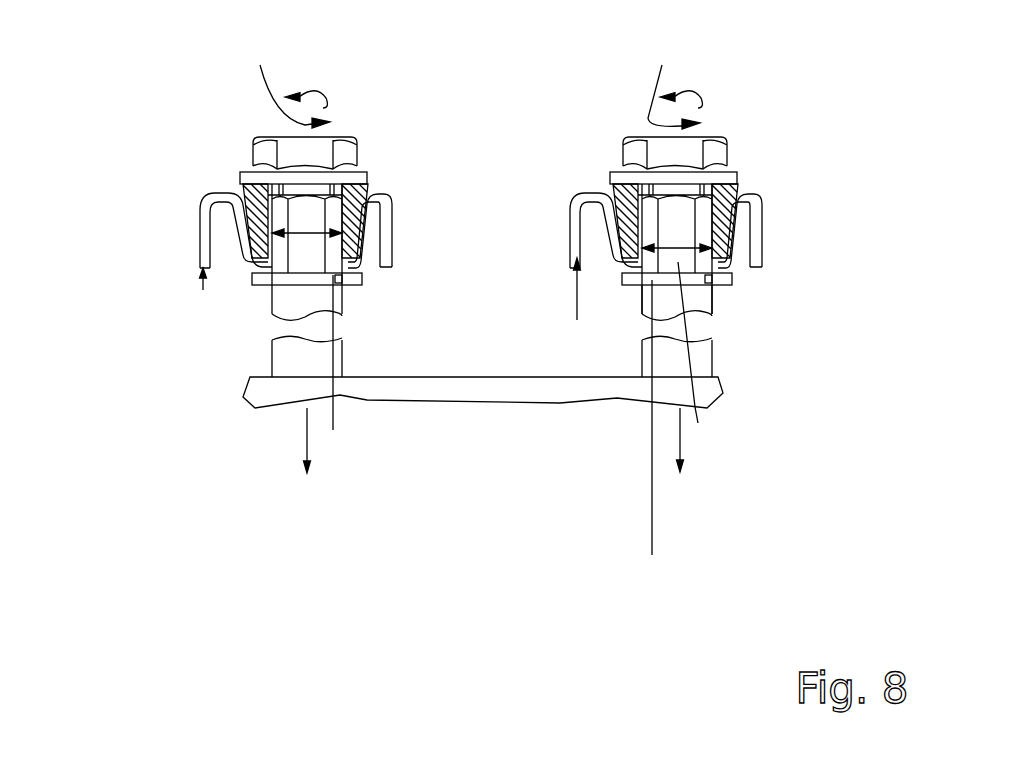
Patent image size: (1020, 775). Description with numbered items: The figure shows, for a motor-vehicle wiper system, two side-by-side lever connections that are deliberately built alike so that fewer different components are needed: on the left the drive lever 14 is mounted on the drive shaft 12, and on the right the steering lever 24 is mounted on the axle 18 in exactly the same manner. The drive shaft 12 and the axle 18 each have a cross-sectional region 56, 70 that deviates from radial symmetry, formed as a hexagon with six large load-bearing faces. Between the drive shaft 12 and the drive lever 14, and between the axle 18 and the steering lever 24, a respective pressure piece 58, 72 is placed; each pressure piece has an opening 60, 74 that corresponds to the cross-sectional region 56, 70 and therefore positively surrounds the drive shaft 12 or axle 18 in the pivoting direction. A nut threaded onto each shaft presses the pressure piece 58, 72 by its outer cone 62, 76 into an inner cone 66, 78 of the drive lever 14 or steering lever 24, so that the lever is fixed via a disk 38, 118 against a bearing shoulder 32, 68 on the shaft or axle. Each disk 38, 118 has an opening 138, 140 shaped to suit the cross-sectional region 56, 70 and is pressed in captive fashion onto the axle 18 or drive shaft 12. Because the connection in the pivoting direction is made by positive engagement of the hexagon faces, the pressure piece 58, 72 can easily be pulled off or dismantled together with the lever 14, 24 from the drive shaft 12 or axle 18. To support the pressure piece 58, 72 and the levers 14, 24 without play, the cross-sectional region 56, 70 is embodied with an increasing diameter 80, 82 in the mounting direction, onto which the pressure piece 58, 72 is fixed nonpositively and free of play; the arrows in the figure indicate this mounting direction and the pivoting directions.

The drive shaft 12 is at (703, 353).
The drive lever 14 is at (578, 307).
The axle 18 is at (274, 364).
The steering lever 24 is at (200, 287).
The bearing shoulder 32 is at (340, 283).
The disk 38 is at (363, 286).
The cross-sectional region deviating from radial symmetry 56 is at (330, 212).
The pressure piece 58 is at (273, 217).
The opening 60 is at (238, 192).
The outer cone 62 is at (250, 222).
The inner cone 66 is at (207, 253).
The bearing shoulder 68 is at (645, 280).
The cross-sectional region deviating from radial symmetry 70 is at (703, 238).
The pressure piece 72 is at (730, 192).
The opening 74 is at (650, 217).
The outer cone 76 is at (730, 242).
The inner cone 78 is at (627, 220).
The increasing diameter 80 is at (698, 423).
The increasing diameter 82 is at (303, 234).
The disk 118 is at (733, 284).
The opening 138 is at (333, 430).
The opening 140 is at (652, 440).